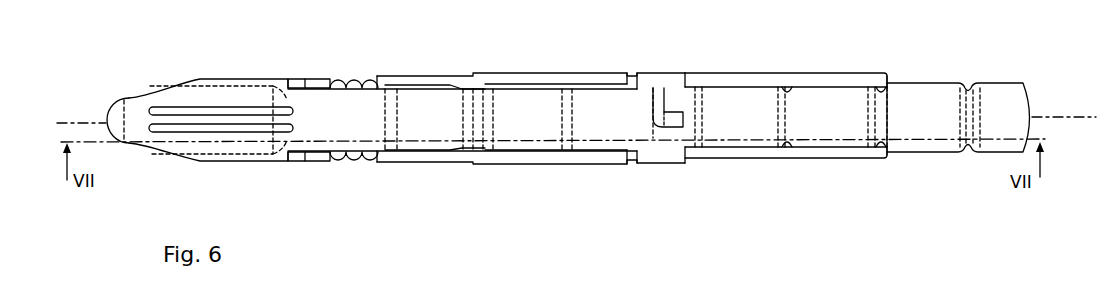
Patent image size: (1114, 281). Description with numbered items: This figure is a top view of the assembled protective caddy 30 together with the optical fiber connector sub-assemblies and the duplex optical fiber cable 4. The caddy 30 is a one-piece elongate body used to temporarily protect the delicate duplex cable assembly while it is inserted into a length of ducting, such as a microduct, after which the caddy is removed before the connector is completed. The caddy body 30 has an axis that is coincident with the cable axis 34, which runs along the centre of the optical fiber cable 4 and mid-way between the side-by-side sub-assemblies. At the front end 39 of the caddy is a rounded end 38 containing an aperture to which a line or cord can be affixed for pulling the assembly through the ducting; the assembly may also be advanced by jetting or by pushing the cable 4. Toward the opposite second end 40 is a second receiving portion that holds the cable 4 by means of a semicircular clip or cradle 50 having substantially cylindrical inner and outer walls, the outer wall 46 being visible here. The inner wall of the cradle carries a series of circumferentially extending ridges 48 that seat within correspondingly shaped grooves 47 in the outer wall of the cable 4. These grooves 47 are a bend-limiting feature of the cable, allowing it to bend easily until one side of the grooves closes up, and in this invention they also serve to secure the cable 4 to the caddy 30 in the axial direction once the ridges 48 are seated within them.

The protective caddy 30 is at (210, 60).
The axis 34 is at (75, 118).
The rounded end 38 is at (158, 83).
The front end 39 is at (104, 108).
The semicircular clip or cradle 50 is at (739, 70).
The outer wall 46 is at (723, 158).
The grooves 47 is at (804, 86).
The ridges 48 is at (787, 150).
The second end 40 is at (895, 160).
The optical fiber cable 4 is at (929, 82).